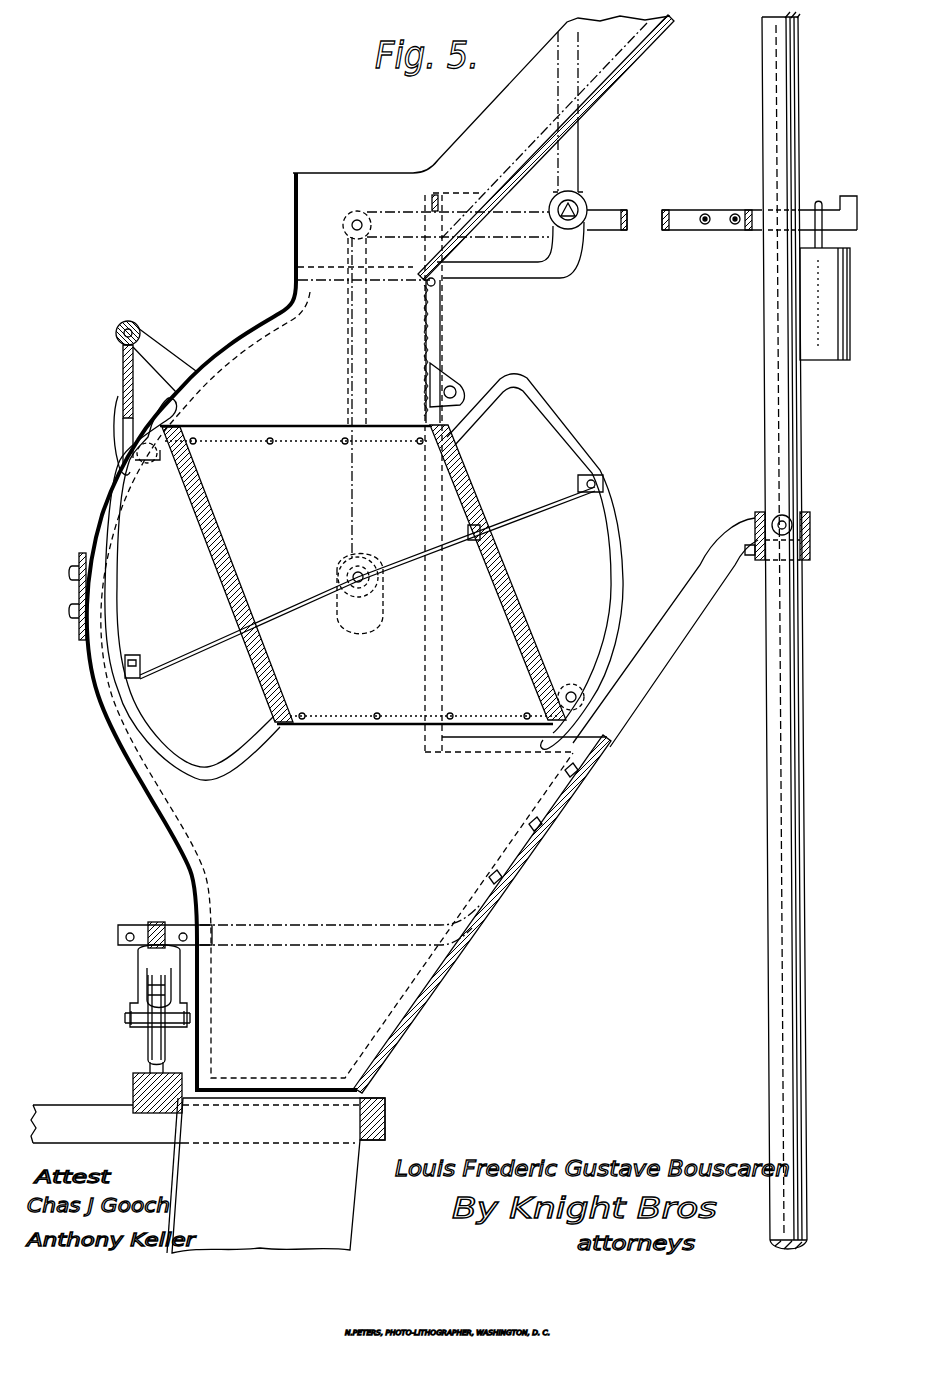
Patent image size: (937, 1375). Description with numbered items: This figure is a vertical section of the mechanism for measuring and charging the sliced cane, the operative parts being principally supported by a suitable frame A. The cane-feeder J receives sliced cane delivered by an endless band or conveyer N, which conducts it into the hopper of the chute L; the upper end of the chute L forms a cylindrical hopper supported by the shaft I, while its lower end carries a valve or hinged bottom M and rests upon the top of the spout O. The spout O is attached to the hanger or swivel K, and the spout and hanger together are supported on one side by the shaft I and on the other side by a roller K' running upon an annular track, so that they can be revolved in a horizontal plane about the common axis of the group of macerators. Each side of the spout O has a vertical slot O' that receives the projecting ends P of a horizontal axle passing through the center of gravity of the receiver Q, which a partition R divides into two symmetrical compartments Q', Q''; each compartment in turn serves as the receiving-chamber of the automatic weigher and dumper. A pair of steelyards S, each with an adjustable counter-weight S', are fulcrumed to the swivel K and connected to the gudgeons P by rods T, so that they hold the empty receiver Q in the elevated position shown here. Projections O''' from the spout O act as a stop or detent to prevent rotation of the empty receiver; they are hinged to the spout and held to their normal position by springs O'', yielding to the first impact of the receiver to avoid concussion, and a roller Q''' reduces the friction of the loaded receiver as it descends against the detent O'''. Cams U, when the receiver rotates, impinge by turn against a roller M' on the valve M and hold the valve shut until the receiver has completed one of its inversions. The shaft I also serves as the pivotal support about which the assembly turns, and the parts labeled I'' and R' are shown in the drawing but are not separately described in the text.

The shaft I is at (784, 630).
The pivot pin I'' is at (423, 308).
The cane-feeder J is at (506, 502).
The hanger or swivel K is at (355, 571).
The roller K' is at (154, 1009).
The chute L is at (483, 147).
The valve or hinged bottom M is at (449, 350).
The roller M' is at (460, 381).
The endless band or conveyer N is at (276, 1175).
The spout O is at (340, 633).
The vertical slot O' is at (360, 594).
The spring O'' is at (107, 435).
The projection or detent O''' is at (145, 393).
The trunnions or gudgeons P is at (368, 582).
The receiver Q is at (383, 581).
The compartment Q' is at (315, 508).
The compartment Q'' is at (392, 664).
The roller Q''' is at (156, 469).
The partition R is at (367, 583).
The block R' is at (141, 1086).
The steelyard S is at (759, 208).
The adjustable counter-weight S' is at (825, 280).
The rod T is at (450, 473).
The cam U is at (364, 577).
The frame A is at (107, 1124).